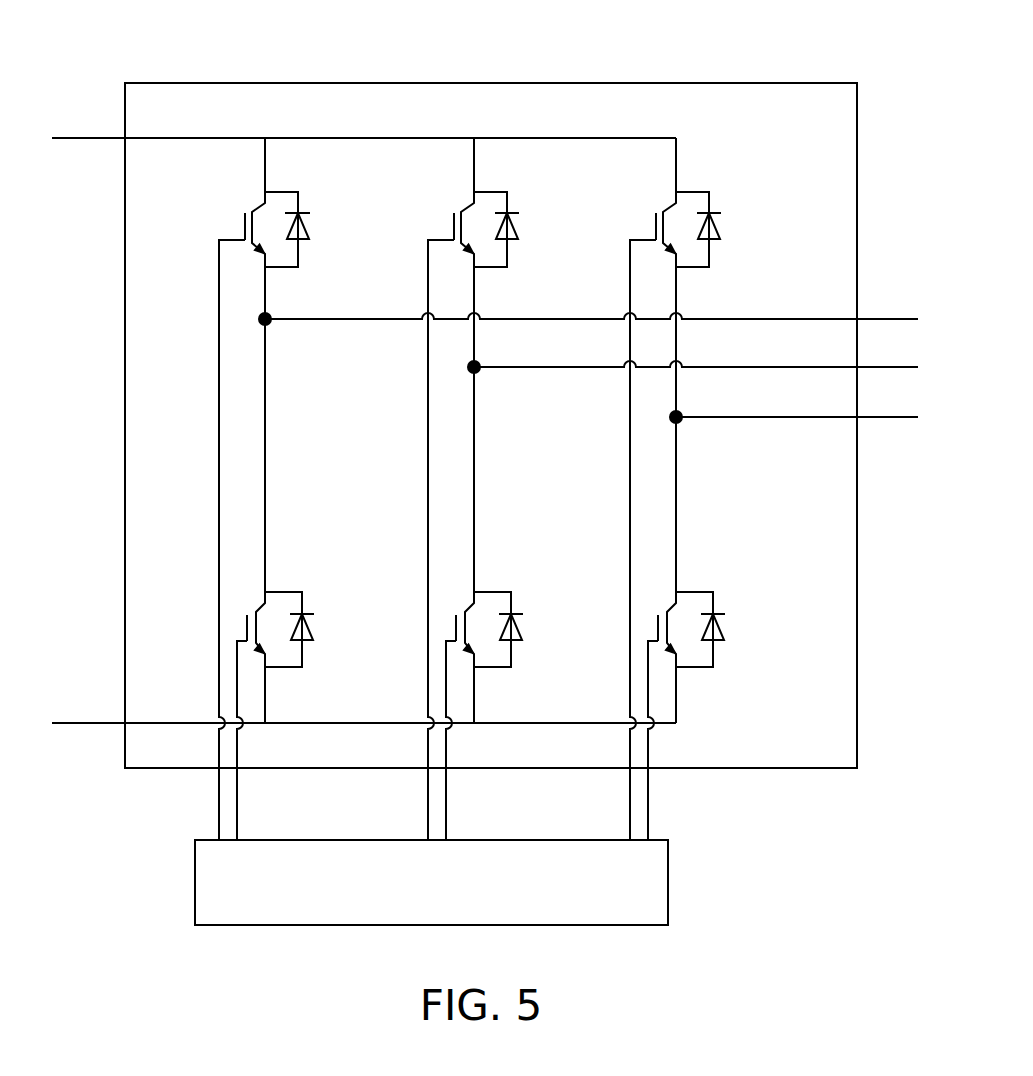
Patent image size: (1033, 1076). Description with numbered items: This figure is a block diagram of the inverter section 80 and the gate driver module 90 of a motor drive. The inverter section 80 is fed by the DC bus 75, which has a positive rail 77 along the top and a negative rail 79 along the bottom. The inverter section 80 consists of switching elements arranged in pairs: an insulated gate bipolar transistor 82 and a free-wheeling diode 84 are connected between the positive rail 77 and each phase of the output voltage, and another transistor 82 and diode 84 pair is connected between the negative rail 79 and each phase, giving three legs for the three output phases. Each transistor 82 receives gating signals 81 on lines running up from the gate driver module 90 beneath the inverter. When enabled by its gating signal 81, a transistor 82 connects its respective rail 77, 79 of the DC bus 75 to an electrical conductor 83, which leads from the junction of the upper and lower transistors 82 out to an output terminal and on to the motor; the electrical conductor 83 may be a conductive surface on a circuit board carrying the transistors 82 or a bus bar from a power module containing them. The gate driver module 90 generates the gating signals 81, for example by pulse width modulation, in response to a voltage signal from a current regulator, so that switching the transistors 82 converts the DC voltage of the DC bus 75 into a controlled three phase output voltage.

The DC bus 75 is at (88, 158).
The positive rail 77 is at (62, 137).
The negative rail 79 is at (65, 724).
The inverter section 80 is at (399, 82).
The gating signals 81 is at (237, 815).
The insulated gate bipolar transistor 82 is at (226, 221).
The electrical conductor 83 is at (891, 402).
The free-wheeling diode 84 is at (312, 237).
The gate driver module 90 is at (668, 868).